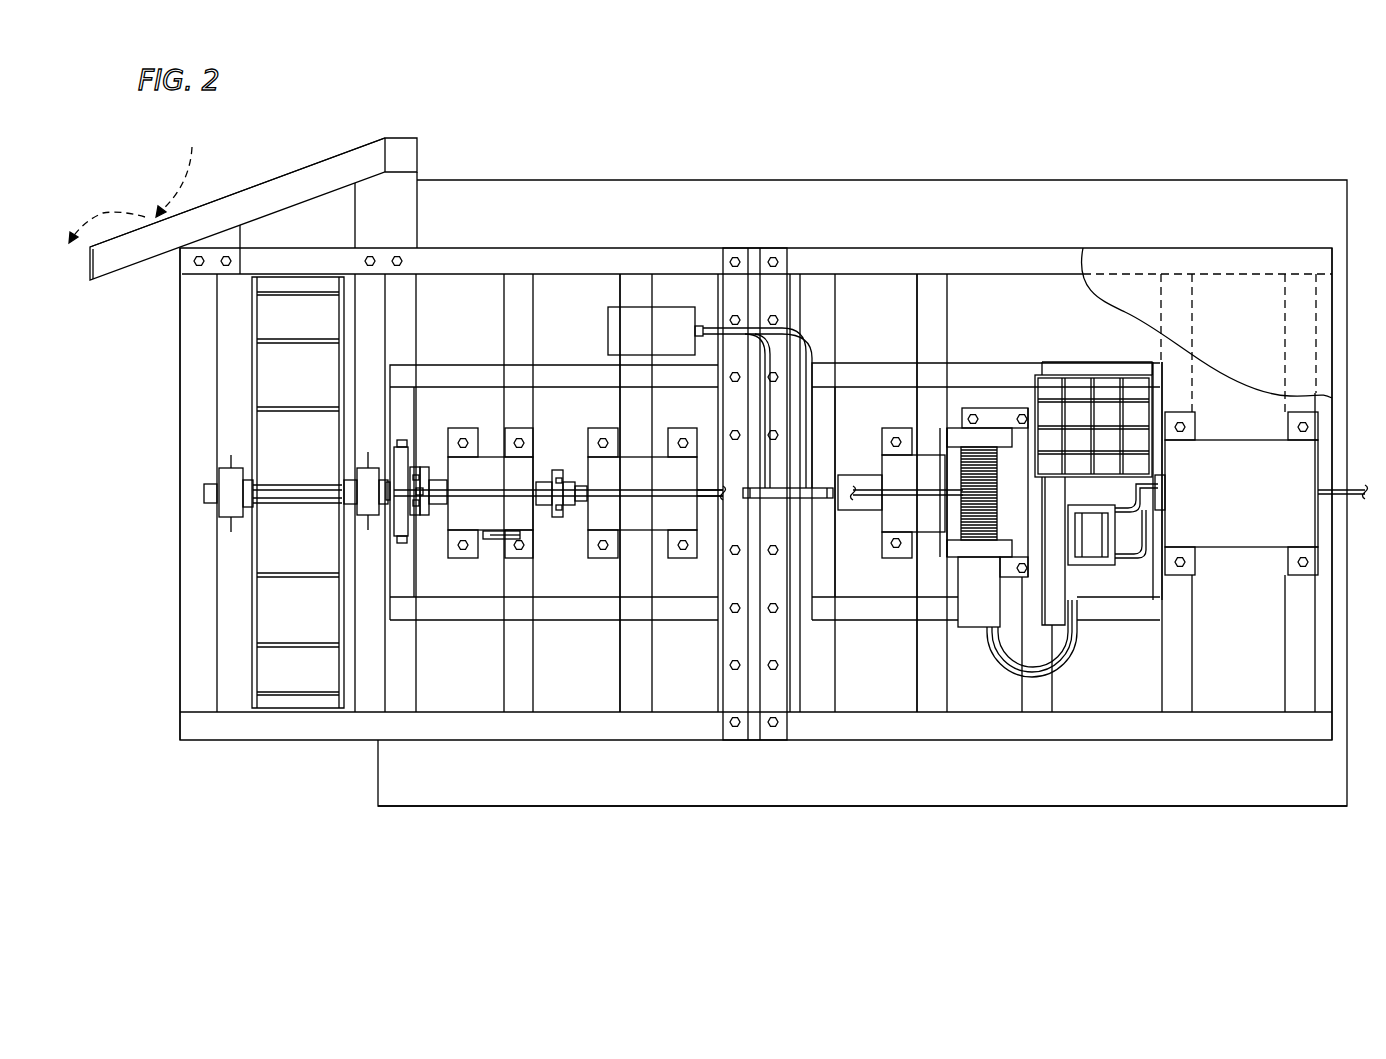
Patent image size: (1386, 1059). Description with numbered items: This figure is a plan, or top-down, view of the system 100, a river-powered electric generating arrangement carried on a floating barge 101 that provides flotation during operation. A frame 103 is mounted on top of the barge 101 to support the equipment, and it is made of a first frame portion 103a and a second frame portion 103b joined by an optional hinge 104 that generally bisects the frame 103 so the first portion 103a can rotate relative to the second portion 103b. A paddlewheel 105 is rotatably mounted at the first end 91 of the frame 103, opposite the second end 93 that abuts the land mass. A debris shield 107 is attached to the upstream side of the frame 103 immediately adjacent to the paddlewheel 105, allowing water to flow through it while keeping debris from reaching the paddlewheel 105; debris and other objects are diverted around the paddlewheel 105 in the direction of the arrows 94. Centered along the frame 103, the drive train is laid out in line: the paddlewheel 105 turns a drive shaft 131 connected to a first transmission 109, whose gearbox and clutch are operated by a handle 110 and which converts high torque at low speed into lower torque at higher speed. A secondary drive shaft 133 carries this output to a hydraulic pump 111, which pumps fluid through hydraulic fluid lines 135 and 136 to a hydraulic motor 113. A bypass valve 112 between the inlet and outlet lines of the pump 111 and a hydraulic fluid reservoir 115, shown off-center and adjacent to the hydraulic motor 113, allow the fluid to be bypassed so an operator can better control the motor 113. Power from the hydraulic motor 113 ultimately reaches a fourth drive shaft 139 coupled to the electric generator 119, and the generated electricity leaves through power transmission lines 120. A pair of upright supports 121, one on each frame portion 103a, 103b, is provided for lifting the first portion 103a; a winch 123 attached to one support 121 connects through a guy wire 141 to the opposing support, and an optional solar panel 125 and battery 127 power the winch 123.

The first end 91 is at (178, 330).
The second end 93 is at (1330, 637).
The arrows 94 is at (186, 170).
The system 100 is at (348, 125).
The barge 101 is at (623, 185).
The frame 103 is at (810, 240).
The first frame portion 103a is at (567, 248).
The second frame portion 103b is at (937, 248).
The hinge 104 is at (757, 740).
The paddlewheel 105 is at (278, 702).
The debris shield 107 is at (300, 177).
The first transmission 109 is at (510, 524).
The handle 110 is at (518, 535).
The hydraulic pump 111 is at (660, 524).
The bypass valve 112 is at (772, 502).
The hydraulic motor 113 is at (933, 525).
The hydraulic fluid reservoir 115 is at (671, 343).
The electric generator 119 is at (1262, 490).
The power transmission lines 120 is at (1365, 490).
The upright supports 121 is at (432, 370).
The winch 123 is at (963, 437).
The solar panel 125 is at (1080, 383).
The battery 127 is at (1097, 567).
The drive shaft 131 is at (440, 483).
The secondary drive shaft 133 is at (568, 480).
The hydraulic fluid line 135 is at (770, 347).
The hydraulic fluid line 136 is at (753, 327).
The fourth drive shaft 139 is at (1152, 492).
The guy wire 141 is at (680, 493).